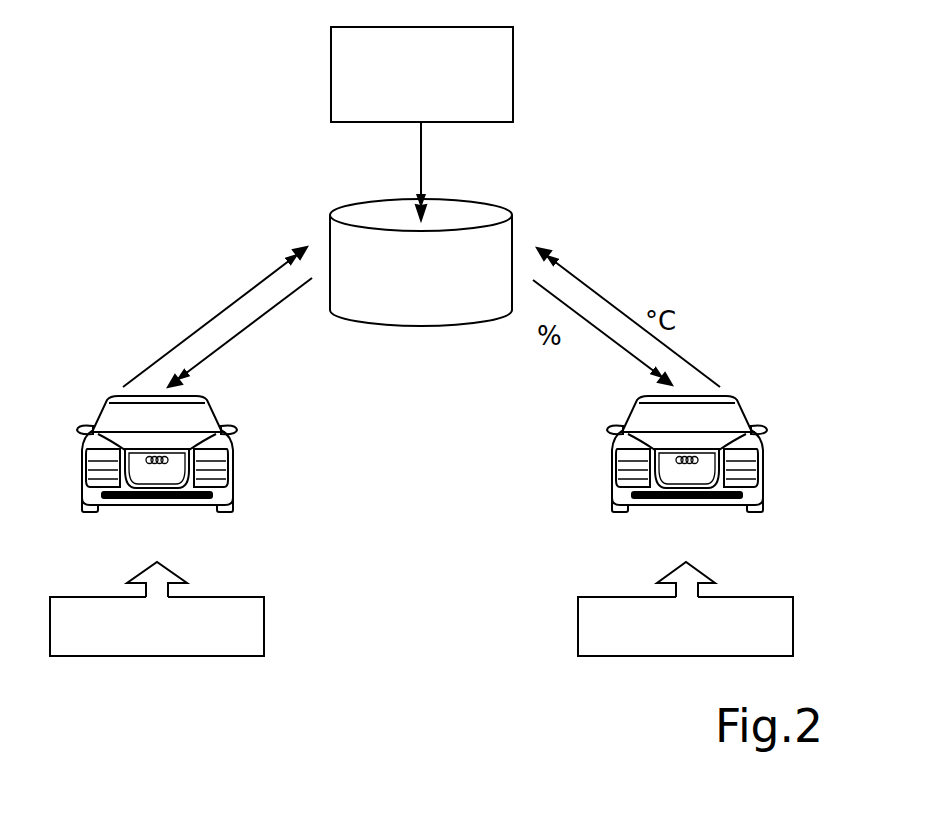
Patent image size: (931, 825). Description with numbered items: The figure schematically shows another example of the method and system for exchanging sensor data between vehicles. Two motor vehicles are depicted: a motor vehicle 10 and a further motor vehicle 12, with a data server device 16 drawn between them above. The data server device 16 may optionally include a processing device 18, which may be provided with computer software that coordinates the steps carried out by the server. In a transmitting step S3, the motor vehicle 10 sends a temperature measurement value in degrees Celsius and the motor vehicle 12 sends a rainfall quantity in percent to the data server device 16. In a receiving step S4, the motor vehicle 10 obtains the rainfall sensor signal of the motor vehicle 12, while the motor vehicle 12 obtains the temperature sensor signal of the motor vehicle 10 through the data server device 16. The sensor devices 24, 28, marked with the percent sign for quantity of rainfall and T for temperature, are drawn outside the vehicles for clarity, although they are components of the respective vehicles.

The motor vehicle 10 is at (746, 410).
The motor vehicle 12 is at (92, 402).
The data server device 16 is at (512, 226).
The processing device 18 is at (513, 57).
The sensor device 24 is at (264, 627).
The sensor device 28 is at (578, 622).
The transmitting step S3 is at (234, 300).
The receiving step S4 is at (270, 283).